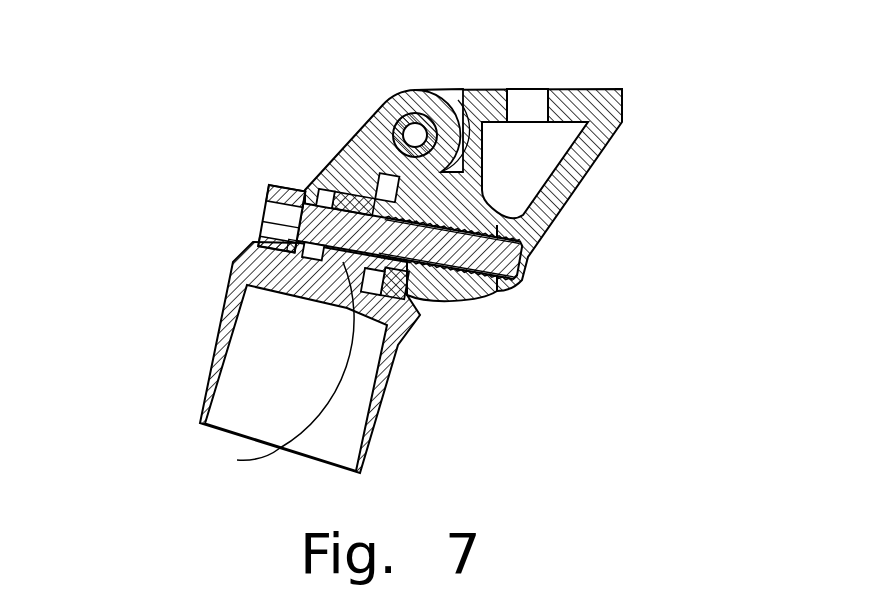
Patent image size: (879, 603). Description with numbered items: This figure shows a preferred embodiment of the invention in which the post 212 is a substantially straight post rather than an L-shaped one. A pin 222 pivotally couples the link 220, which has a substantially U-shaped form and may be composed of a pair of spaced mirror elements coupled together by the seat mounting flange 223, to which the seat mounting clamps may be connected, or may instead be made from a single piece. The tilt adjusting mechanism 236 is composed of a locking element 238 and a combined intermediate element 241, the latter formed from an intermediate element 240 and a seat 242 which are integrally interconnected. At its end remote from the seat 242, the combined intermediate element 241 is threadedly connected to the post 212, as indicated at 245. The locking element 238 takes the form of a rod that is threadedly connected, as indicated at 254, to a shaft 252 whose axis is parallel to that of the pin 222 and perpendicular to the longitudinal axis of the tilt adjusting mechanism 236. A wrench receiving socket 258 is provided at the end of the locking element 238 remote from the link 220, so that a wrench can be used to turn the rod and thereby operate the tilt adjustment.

The post 212 is at (217, 338).
The link 220 is at (622, 102).
The pin 222 is at (382, 172).
The seat mounting flange 223 is at (585, 88).
The tilt adjusting mechanism 236 is at (439, 308).
The locking element 238 is at (525, 260).
The intermediate element 240 is at (373, 210).
The combined intermediate element 241 is at (378, 137).
The seat 242 is at (452, 172).
The threaded connection 245 is at (262, 373).
The shaft 252 is at (413, 297).
The threaded connection 254 is at (497, 233).
The wrench receiving socket 258 is at (265, 215).